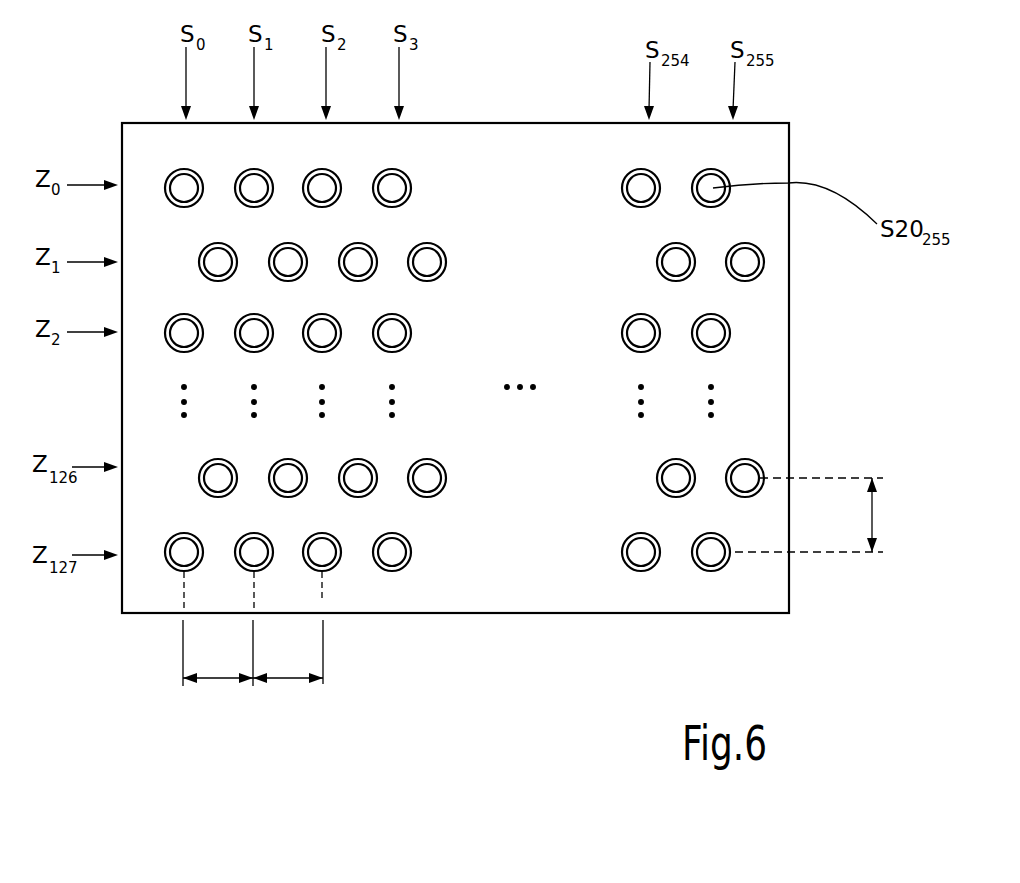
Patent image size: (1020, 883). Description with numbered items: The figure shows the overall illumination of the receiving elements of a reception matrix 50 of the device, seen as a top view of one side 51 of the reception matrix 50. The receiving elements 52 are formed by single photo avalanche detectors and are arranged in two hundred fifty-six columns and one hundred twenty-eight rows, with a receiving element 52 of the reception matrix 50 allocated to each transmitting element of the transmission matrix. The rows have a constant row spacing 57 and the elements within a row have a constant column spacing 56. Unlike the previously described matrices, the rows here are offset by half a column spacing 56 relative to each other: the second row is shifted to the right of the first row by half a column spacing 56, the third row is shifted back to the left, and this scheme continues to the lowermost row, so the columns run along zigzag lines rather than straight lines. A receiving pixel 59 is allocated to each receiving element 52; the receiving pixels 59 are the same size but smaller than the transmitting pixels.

The reception matrix 50 is at (795, 137).
The side of the reception matrix 51 is at (510, 167).
The receiving element 52 is at (712, 553).
The column spacing 56 is at (219, 681).
The row spacing 57 is at (873, 518).
The receiving pixel 59 is at (427, 262).